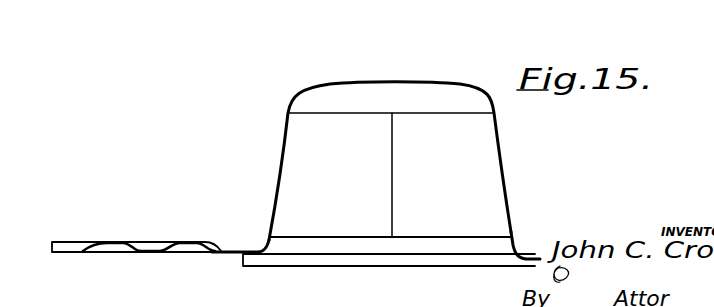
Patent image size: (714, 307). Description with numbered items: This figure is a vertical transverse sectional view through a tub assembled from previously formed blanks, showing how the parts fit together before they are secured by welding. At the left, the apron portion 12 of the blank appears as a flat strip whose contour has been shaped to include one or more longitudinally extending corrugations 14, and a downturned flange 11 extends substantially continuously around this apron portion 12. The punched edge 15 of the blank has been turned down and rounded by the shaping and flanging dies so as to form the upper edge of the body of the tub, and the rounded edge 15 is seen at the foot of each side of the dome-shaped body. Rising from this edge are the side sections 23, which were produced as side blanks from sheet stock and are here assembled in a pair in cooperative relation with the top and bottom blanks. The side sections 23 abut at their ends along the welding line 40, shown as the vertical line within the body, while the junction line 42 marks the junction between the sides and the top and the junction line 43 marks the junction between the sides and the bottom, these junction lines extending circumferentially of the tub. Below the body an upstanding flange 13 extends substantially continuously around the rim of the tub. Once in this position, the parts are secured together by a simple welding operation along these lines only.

The downturned flange 11 is at (64, 242).
The apron portion 12 is at (83, 242).
The longitudinally extending corrugations 14 is at (150, 246).
The punched edge 15 is at (262, 247).
The side sections 23 is at (277, 176).
The welding line 40 is at (393, 168).
The junction line between sides and top 42 is at (338, 237).
The junction line between sides and bottom 43 is at (391, 127).
The upstanding flange 13 is at (531, 263).